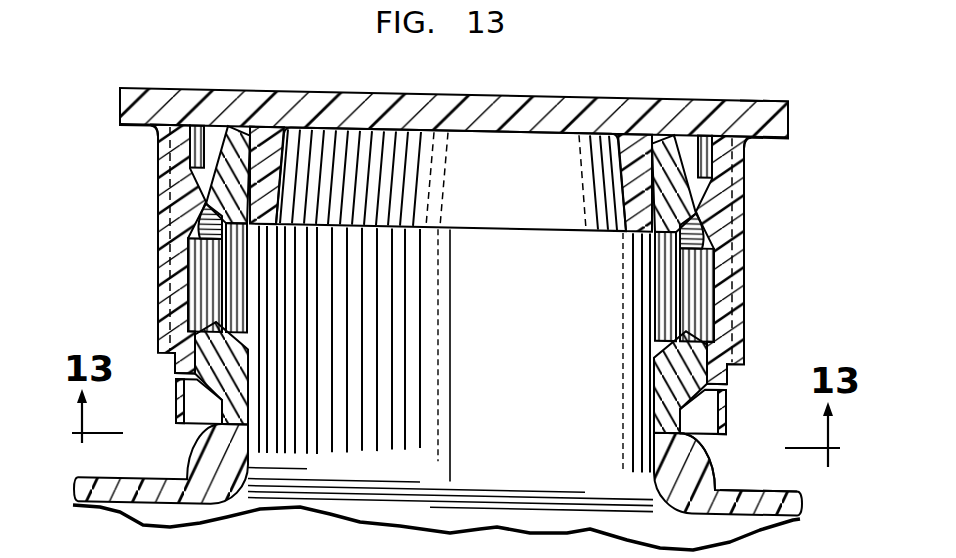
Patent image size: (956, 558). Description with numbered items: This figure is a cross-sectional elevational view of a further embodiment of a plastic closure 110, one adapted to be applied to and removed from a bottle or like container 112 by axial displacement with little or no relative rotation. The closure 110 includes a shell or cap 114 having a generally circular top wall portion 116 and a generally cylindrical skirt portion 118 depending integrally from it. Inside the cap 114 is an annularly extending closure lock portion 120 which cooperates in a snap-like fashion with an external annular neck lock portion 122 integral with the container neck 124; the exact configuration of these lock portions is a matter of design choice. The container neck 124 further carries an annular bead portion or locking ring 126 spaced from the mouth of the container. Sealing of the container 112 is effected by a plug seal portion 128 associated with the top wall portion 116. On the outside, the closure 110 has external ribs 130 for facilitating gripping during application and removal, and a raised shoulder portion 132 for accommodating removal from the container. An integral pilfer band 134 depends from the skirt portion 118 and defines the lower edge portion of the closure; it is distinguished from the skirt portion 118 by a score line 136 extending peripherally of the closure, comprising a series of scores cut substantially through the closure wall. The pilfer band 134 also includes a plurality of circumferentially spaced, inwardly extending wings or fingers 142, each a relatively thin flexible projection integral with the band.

The plastic closure 110 is at (757, 82).
The container 112 is at (701, 475).
The shell or cap 114 is at (748, 297).
The top wall portion 116 is at (540, 91).
The skirt portion 118 is at (720, 308).
The closure lock portion 120 is at (738, 203).
The neck lock portion 122 is at (688, 191).
The container neck 124 is at (655, 444).
The annular bead portion or locking ring 126 is at (207, 367).
The plug seal portion 128 is at (648, 185).
The external ribs 130 is at (157, 192).
The raised shoulder portion 132 is at (120, 128).
The pilfer band 134 is at (176, 397).
The score line 136 is at (177, 374).
The wings or fingers 142 is at (207, 425).